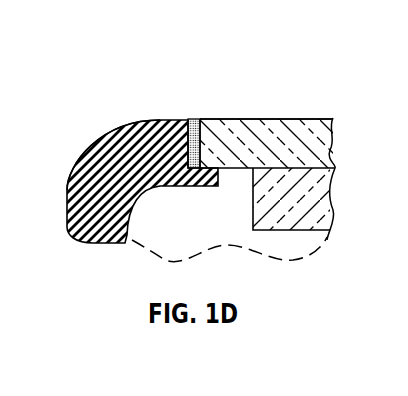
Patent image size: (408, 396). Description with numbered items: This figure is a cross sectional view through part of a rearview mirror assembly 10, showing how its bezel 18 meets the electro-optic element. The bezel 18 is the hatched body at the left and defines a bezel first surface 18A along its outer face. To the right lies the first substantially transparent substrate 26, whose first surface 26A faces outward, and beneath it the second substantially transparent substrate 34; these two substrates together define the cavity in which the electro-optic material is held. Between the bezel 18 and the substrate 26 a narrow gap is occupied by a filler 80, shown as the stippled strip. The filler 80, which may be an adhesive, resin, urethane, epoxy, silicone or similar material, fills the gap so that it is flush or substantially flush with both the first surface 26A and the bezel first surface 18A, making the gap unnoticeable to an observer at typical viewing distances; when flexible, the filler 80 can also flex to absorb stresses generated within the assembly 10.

The rearview mirror assembly 10 is at (130, 82).
The bezel 18 is at (92, 184).
The bezel first surface 18A is at (132, 124).
The filler 80 is at (192, 120).
The first substantially transparent substrate 26 is at (307, 130).
The first surface 26A is at (252, 118).
The second substantially transparent substrate 34 is at (315, 197).